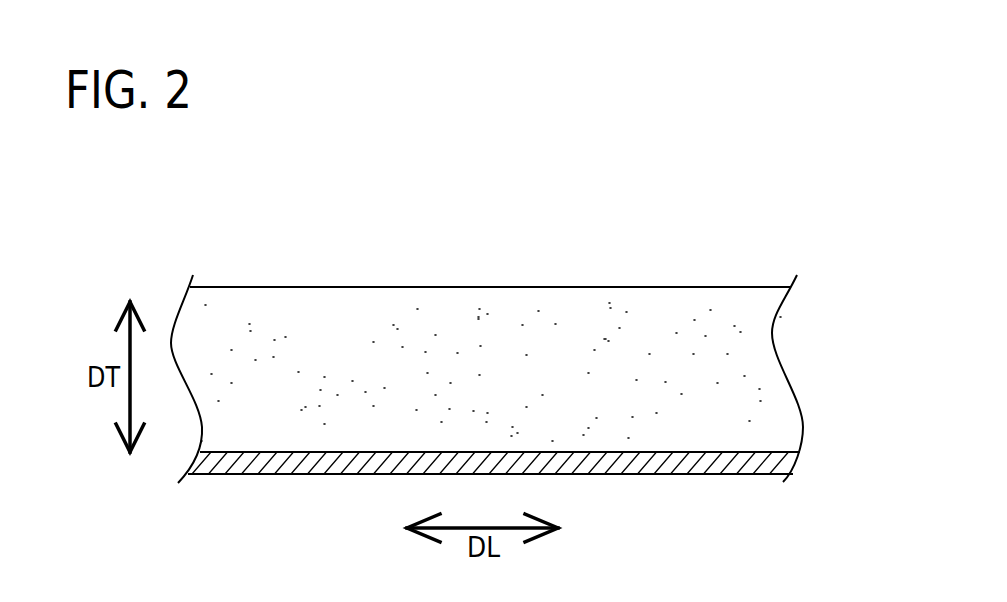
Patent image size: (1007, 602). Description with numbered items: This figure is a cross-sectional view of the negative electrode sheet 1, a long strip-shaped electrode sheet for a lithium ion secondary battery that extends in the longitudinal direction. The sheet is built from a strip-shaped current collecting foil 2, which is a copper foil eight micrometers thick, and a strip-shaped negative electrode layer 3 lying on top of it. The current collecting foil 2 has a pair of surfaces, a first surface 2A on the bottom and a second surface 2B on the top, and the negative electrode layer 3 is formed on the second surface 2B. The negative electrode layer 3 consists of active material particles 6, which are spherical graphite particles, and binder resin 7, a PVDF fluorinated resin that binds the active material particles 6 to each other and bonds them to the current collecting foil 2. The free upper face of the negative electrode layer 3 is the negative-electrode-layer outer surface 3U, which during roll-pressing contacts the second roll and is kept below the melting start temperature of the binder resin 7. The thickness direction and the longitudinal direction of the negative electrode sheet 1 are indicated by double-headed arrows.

The negative electrode sheet 1 is at (650, 263).
The current collecting foil 2 is at (271, 475).
The first surface 2A is at (625, 475).
The second surface 2B is at (683, 452).
The negative electrode layer 3 is at (433, 298).
The negative-electrode-layer outer surface 3U is at (289, 287).
The active material particles 6 is at (491, 328).
The binder resin 7 is at (365, 308).